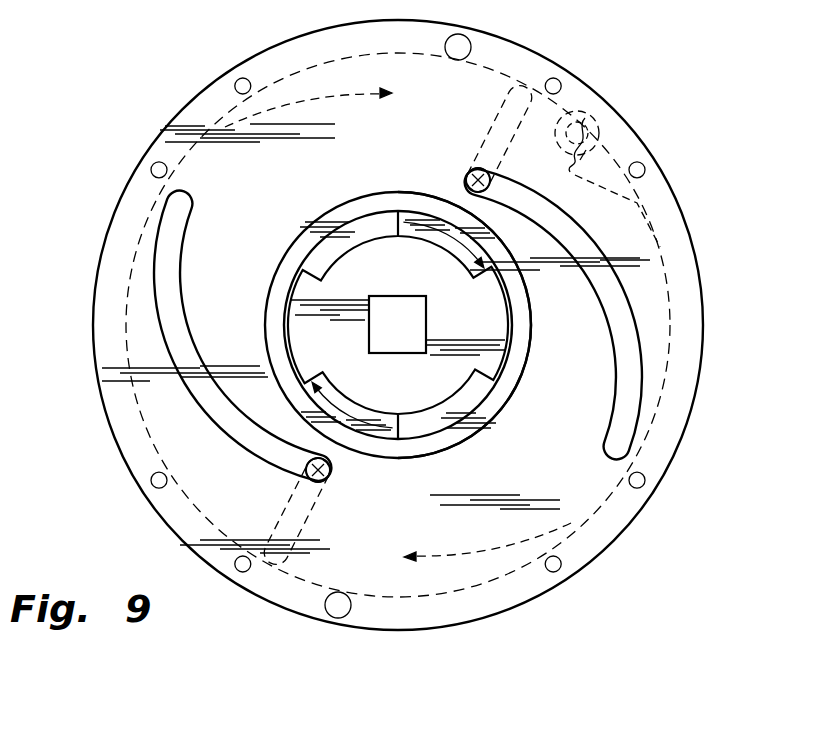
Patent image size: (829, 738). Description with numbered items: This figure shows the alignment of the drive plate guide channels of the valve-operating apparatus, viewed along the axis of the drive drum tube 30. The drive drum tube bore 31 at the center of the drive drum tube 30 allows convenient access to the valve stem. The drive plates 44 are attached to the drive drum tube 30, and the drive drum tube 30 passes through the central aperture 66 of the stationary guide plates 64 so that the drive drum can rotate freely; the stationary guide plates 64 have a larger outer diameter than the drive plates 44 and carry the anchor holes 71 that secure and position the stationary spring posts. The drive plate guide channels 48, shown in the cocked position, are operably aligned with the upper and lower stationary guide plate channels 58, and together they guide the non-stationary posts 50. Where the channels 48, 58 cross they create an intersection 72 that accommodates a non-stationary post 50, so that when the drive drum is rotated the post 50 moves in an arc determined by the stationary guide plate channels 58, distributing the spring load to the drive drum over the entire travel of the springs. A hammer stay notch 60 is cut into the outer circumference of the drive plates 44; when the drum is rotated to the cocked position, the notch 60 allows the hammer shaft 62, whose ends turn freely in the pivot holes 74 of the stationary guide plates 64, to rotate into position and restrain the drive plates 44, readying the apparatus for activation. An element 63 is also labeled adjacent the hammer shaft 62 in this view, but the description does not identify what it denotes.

The drive drum tube 30 is at (266, 320).
The drive drum tube bore 31 is at (465, 398).
The drive plate 44 is at (667, 390).
The drive plate guide channel 48 is at (500, 122).
The non-stationary post 50 is at (466, 177).
The stationary guide plate channel 58 is at (631, 334).
The hammer stay notch 60 is at (577, 180).
The hammer shaft 62 is at (598, 138).
The spring 63 is at (582, 110).
The stationary guide plate 64 is at (617, 540).
The central aperture 66 is at (530, 346).
The anchor hole 71 is at (460, 45).
The intersection 72 is at (492, 170).
The pivot hole 74 is at (590, 157).